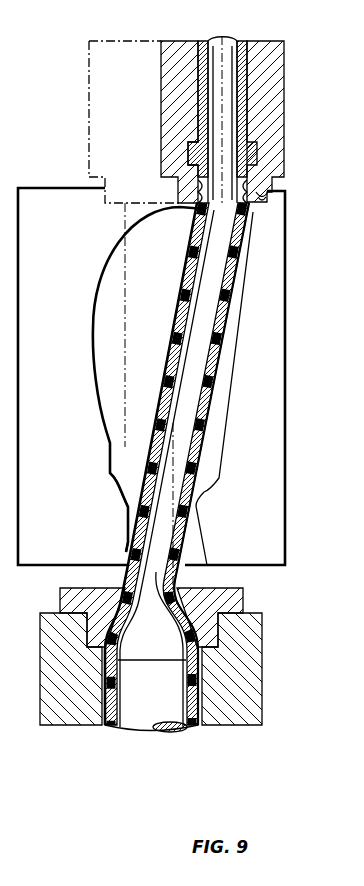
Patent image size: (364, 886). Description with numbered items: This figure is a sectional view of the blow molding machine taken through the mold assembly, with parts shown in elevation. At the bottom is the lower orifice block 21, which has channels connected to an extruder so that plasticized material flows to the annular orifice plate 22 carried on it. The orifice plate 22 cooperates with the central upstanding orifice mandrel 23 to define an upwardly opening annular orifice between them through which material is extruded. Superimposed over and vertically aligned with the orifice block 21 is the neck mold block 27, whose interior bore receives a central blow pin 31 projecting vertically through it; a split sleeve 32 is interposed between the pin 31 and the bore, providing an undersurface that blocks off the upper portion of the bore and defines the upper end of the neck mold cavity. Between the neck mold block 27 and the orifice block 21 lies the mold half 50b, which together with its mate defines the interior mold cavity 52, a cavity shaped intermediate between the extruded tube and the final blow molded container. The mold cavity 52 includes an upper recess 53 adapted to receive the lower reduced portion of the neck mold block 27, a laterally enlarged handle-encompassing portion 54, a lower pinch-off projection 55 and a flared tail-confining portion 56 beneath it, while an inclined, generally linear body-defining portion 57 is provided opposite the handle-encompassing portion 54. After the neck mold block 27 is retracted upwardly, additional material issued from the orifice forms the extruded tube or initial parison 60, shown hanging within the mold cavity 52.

The lower orifice block 21 is at (230, 718).
The annular orifice plate 22 is at (243, 600).
The orifice mandrel 23 is at (132, 723).
The neck mold block 27 is at (278, 110).
The blow pin 31 is at (202, 69).
The split sleeve 32 is at (243, 68).
The mold half 50b is at (265, 567).
The mold cavity 52 is at (93, 333).
The upper recess 53 is at (268, 200).
The handle-encompassing portion 54 is at (132, 243).
The pinch-off projection 55 is at (196, 504).
The tail-confining portion 56 is at (128, 527).
The body-defining portion 57 is at (230, 385).
The initial parison 60 is at (222, 333).